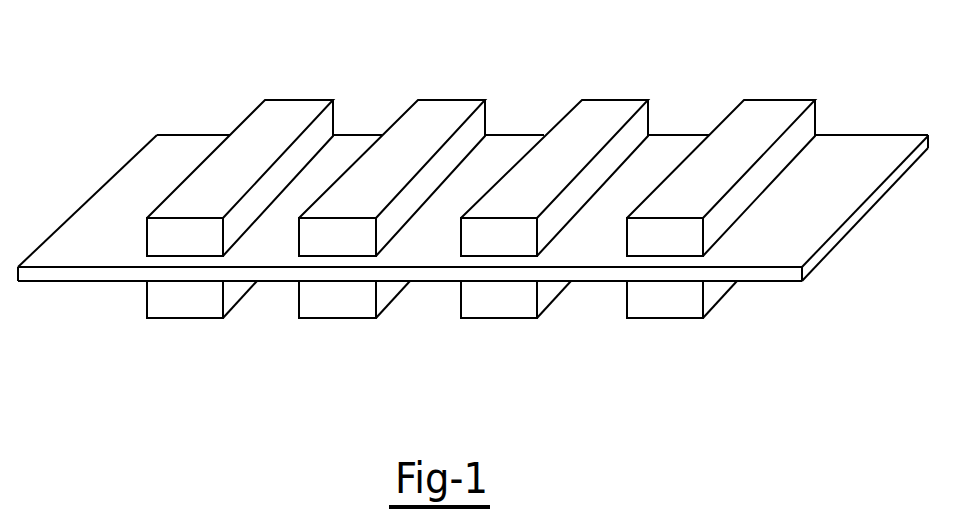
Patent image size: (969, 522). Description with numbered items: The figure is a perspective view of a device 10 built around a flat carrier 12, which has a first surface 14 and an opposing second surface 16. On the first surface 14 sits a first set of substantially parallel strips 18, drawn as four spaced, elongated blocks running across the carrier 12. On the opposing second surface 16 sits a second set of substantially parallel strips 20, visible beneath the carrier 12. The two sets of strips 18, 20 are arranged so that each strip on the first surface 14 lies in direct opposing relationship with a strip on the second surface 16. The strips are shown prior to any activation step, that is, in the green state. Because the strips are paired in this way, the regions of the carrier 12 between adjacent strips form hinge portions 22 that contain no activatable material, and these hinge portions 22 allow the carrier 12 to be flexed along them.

The device 10 is at (150, 65).
The carrier 12 is at (473, 210).
The first surface 14 is at (848, 158).
The second surface 16 is at (815, 277).
The first set of substantially parallel strips 18 is at (282, 120).
The second set of substantially parallel strips 20 is at (190, 318).
The hinge portions 22 is at (190, 147).